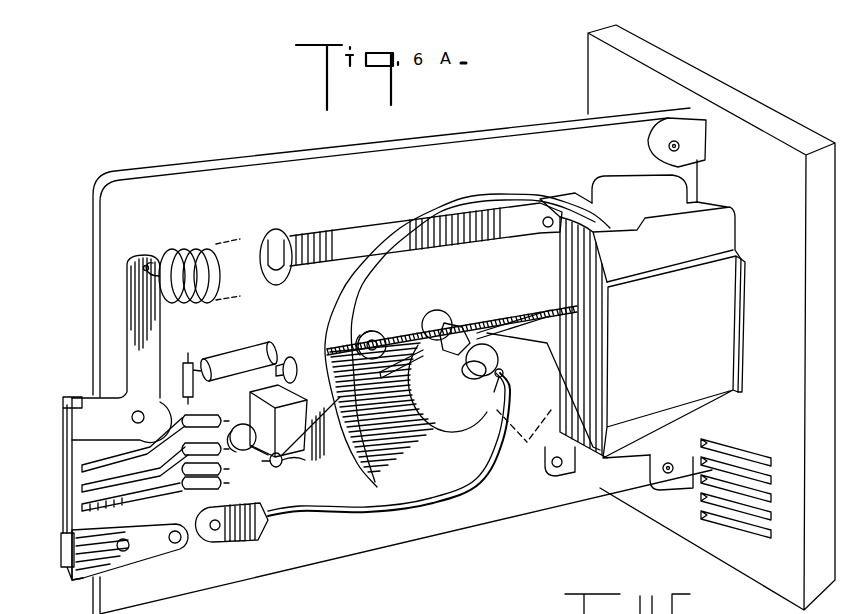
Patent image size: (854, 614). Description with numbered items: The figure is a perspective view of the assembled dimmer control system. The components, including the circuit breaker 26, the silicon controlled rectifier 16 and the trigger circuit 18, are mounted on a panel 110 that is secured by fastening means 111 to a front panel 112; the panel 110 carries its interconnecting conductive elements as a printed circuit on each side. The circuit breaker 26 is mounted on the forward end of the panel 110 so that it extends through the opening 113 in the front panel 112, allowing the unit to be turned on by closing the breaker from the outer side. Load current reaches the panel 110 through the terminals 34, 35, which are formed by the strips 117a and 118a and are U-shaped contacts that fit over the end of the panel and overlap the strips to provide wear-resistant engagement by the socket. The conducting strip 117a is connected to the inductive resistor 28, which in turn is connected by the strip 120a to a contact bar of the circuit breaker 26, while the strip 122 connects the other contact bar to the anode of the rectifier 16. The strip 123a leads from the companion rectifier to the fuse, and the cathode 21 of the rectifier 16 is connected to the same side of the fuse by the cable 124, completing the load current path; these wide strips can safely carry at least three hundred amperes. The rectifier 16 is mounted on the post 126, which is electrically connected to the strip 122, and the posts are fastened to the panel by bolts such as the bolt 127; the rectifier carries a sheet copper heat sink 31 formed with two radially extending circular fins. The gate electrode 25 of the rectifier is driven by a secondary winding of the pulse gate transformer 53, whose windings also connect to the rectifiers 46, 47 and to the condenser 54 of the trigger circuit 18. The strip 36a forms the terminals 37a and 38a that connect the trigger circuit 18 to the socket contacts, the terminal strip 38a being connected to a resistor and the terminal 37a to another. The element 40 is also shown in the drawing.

The panel 110 is at (235, 163).
The fastening means 111 is at (690, 133).
The front panel 112 is at (730, 549).
The opening 113 is at (745, 295).
The circuit breaker 26 is at (686, 341).
The inductive resistor 28 is at (199, 249).
The strip 120a is at (394, 228).
The post 126 is at (444, 315).
The bolt 127 is at (369, 338).
The silicon controlled rectifier 16 is at (492, 360).
The cathode 21 is at (503, 371).
The gate electrode 25 is at (482, 372).
The condenser 54 is at (238, 360).
The rectifier 46 is at (282, 367).
The trigger circuit 18 is at (238, 403).
The pulse gate transformer 53 is at (297, 437).
The knob 40 is at (247, 441).
The rectifier 47 is at (285, 460).
The conducting strip 117a is at (132, 370).
The terminal 34 is at (75, 397).
The terminal 35 is at (88, 570).
The strip 36a is at (107, 463).
The terminal 37a is at (133, 477).
The terminal strip 38a is at (113, 510).
The strip 118a is at (153, 550).
The heat sink 31 is at (497, 457).
The strip 122 is at (541, 465).
The cable 124 is at (431, 507).
The strip 123a is at (270, 517).